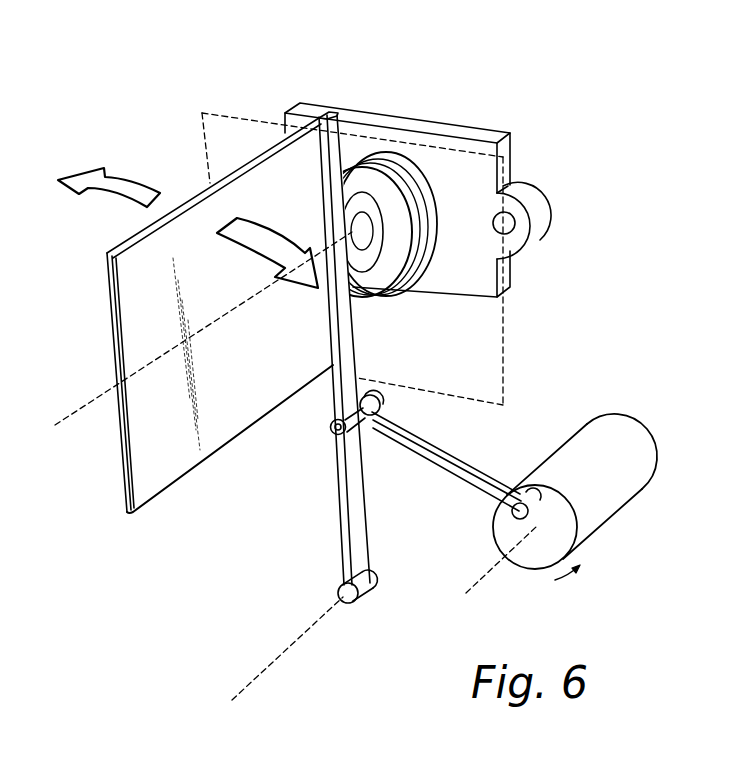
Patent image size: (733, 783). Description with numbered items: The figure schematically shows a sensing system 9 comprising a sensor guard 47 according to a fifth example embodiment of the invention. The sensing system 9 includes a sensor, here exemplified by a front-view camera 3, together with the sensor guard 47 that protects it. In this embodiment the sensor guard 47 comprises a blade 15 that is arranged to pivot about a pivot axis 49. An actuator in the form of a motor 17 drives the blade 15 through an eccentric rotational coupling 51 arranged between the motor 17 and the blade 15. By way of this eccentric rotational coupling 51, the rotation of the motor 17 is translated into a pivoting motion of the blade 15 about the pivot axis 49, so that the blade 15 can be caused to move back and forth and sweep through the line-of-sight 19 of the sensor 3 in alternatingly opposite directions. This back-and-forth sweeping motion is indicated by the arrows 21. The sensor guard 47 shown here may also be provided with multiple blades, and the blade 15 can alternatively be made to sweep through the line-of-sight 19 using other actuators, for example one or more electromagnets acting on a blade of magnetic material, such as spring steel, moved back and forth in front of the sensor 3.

The sensing system 9 is at (572, 104).
The front-view camera 3 is at (413, 260).
The line-of-sight 19 is at (90, 403).
The arrows 21 is at (245, 228).
The blade 15 is at (311, 368).
The sensor guard 47 is at (605, 345).
The motor 17 is at (618, 447).
The eccentric rotational coupling 51 is at (535, 553).
The pivot axis 49 is at (368, 602).